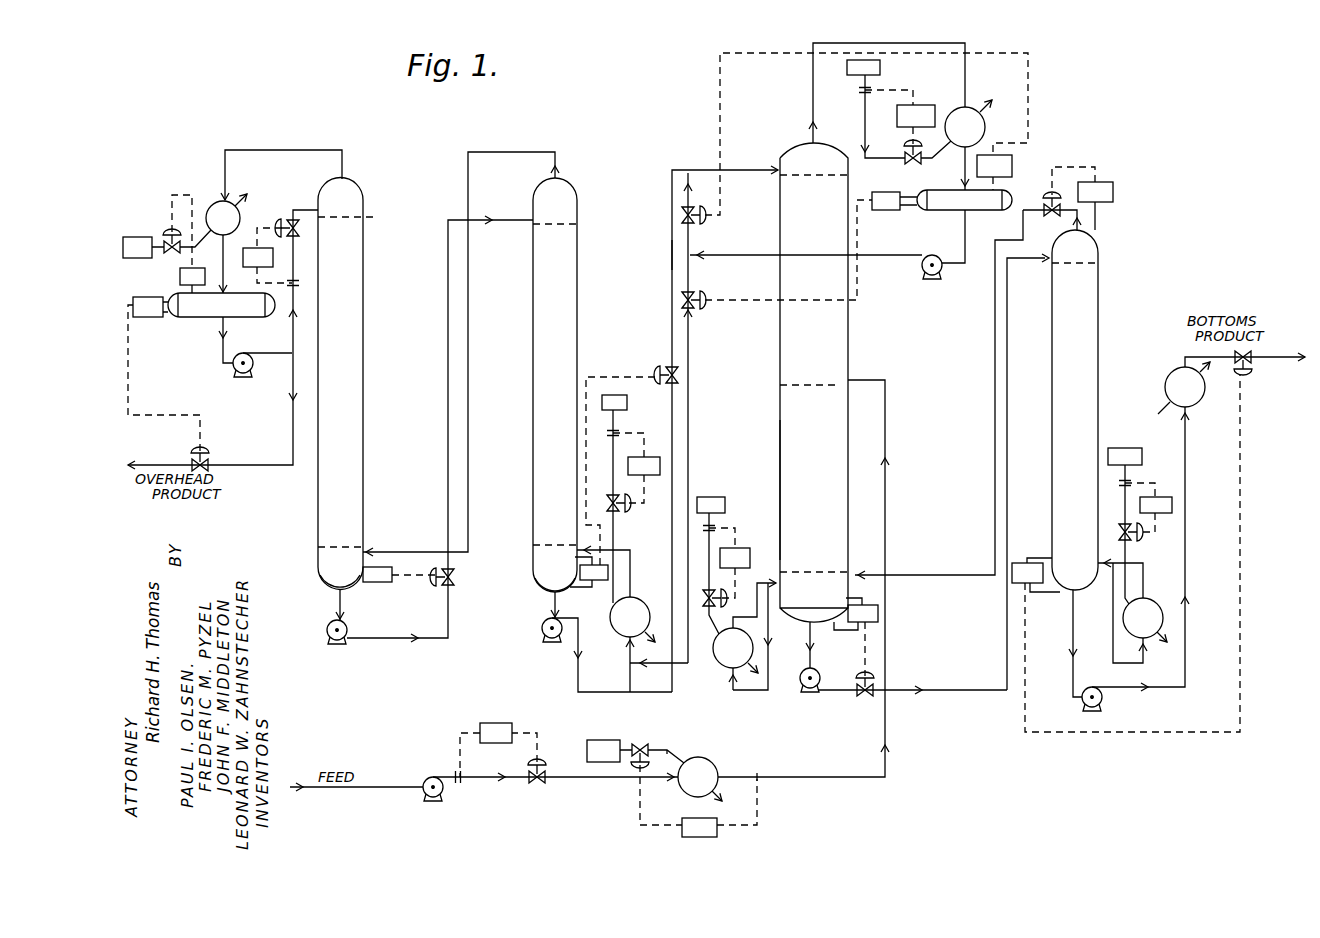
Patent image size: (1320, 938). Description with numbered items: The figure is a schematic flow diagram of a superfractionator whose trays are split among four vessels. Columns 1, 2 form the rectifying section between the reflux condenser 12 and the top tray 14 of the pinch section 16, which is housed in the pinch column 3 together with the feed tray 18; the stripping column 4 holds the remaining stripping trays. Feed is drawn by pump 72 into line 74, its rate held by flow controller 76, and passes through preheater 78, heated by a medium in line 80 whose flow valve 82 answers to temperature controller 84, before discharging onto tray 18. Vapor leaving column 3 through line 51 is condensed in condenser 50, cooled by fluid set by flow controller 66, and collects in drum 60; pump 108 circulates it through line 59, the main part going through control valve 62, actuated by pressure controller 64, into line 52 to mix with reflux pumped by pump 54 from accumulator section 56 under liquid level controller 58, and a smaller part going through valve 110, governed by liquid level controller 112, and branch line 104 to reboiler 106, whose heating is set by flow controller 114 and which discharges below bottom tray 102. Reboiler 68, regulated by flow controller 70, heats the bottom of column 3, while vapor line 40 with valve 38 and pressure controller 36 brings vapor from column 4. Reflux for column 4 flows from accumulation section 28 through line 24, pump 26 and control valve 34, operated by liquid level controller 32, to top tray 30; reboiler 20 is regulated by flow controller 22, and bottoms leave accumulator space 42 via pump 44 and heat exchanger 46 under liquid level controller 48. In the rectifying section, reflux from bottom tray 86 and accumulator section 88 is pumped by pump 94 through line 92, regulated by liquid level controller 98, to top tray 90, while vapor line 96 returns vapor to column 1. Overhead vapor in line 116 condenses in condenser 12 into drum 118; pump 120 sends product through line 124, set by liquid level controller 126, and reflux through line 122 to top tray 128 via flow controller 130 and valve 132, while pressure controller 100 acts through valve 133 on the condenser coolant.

The first rectifying column 1 is at (366, 355).
The second rectifying column 2 is at (581, 337).
The pinch column 3 is at (850, 490).
The stripping column 4 is at (1102, 343).
The reflux condenser 12 is at (234, 198).
The top tray 14 is at (791, 160).
The pinch section 16 is at (824, 240).
The feed tray 18 is at (826, 385).
The reboiler 20 is at (1165, 620).
The flow controller 22 is at (1140, 535).
The transfer line 24 is at (955, 692).
The transfer pump 26 is at (811, 694).
The accumulation section 28 is at (826, 600).
The top tray 30 is at (1100, 260).
The liquid level controller 32 is at (878, 612).
The control valve 34 is at (865, 698).
The pressure controller 36 is at (1113, 192).
The valve 38 is at (1051, 197).
The vapor line 40 is at (993, 343).
The accumulator space 42 is at (1082, 584).
The pump 44 is at (1102, 700).
The heat exchanger 46 is at (1171, 374).
The liquid level controller 48 is at (1030, 588).
The condenser 50 is at (984, 126).
The vapor line 51 is at (812, 88).
The reflux line 52 is at (672, 255).
The pump 54 is at (542, 625).
The accumulator section 56 is at (533, 572).
The liquid level controller 58 is at (599, 581).
The reflux line 59 is at (882, 254).
The reflux accumulator drum 60 is at (943, 208).
The control valve 62 is at (698, 221).
The pressure controller 64 is at (1013, 160).
The flow controller 66 is at (940, 103).
The reboiler 68 is at (720, 661).
The flow controller 70 is at (744, 548).
The feed pump 72 is at (426, 780).
The feed line 74 is at (888, 508).
The flow controller 76 is at (480, 723).
The preheater 78 is at (713, 763).
The heating medium line 80 is at (670, 750).
The valve 82 is at (637, 746).
The temperature controller 84 is at (718, 835).
The bottom tray 86 is at (348, 545).
The accumulator section 88 is at (322, 568).
The top tray 90 is at (578, 222).
The reflux line 92 is at (448, 392).
The pump 94 is at (326, 631).
The vapor line 96 is at (468, 182).
The liquid level controller 98 is at (386, 583).
The pressure controller 100 is at (180, 275).
The bottom tray 102 is at (536, 545).
The branch line 104 is at (690, 368).
The reboiler 106 is at (620, 633).
The pump 108 is at (940, 270).
The control valve 110 is at (700, 303).
The liquid level controller 112 is at (890, 185).
The flow controller 114 is at (645, 456).
The vapor line 116 is at (279, 148).
The accumulator drum 118 is at (197, 318).
The pump 120 is at (233, 370).
The reflux line 122 is at (292, 333).
The overhead product line 124 is at (292, 431).
The liquid level controller 126 is at (147, 318).
The top tray 128 is at (364, 222).
The flow controller 130 is at (248, 243).
The valve 132 is at (284, 216).
The valve 133 is at (168, 230).